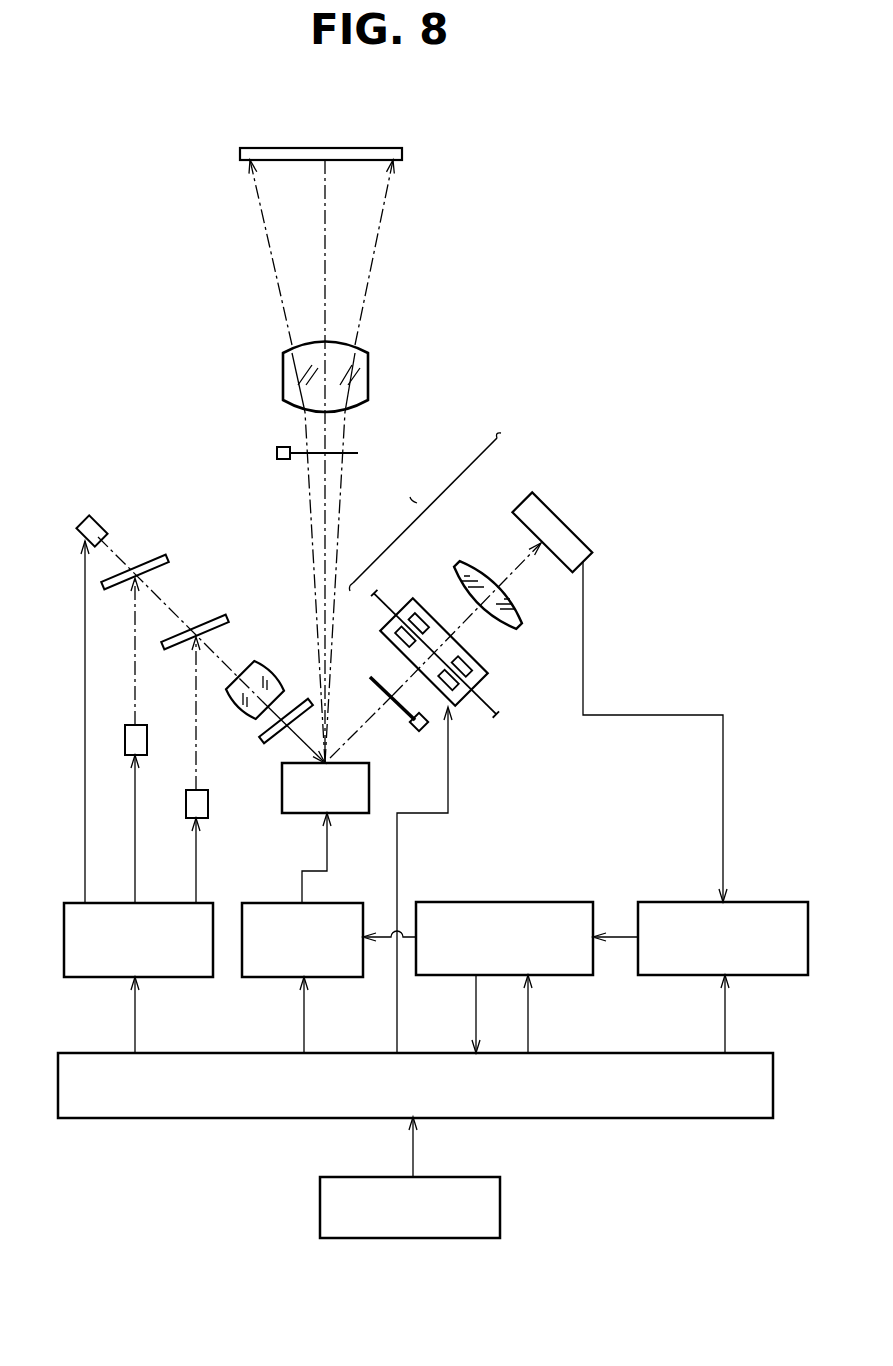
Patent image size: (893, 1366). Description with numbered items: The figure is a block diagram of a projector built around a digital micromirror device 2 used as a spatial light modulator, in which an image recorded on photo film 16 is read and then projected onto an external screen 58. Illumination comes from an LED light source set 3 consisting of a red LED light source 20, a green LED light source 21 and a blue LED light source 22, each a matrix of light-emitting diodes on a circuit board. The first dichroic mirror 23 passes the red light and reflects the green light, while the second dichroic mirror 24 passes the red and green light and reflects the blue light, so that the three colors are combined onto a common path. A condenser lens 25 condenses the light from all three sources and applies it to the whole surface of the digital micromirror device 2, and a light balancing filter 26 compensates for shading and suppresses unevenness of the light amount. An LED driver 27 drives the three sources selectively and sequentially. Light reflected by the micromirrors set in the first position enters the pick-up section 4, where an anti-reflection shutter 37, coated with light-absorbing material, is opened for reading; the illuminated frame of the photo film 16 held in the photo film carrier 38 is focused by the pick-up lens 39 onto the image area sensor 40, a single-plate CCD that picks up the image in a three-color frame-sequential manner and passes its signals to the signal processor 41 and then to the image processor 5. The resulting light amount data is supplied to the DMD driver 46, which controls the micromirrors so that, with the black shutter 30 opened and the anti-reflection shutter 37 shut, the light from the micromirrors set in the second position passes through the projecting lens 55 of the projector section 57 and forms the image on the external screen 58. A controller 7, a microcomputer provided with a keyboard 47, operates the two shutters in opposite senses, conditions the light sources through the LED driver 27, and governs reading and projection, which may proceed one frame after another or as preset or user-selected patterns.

The external screen 58 is at (321, 147).
The projector section 57 is at (203, 245).
The projecting lens 55 is at (283, 373).
The black shutter 30 is at (277, 453).
The LED light source set 3 is at (155, 480).
The red LED light source 20 is at (78, 523).
The first dichroic mirror 23 is at (168, 561).
The second dichroic mirror 24 is at (226, 620).
The condenser lens 25 is at (280, 675).
The light balancing filter 26 is at (262, 747).
The green LED light source 21 is at (125, 730).
The blue LED light source 22 is at (190, 790).
The digital micromirror device 2 is at (368, 775).
The pick-up section 4 is at (435, 595).
The anti-reflection shutter 37 is at (372, 677).
The photo film carrier 38 is at (415, 602).
The pick-up lens 39 is at (483, 570).
The image area sensor 40 is at (565, 526).
The photo film 16 is at (475, 708).
The LED driver 27 is at (178, 977).
The DMD driver 46 is at (265, 902).
The image processor 5 is at (497, 902).
The signal processor 41 is at (675, 902).
The controller 7 is at (618, 1053).
The keyboard 47 is at (500, 1205).